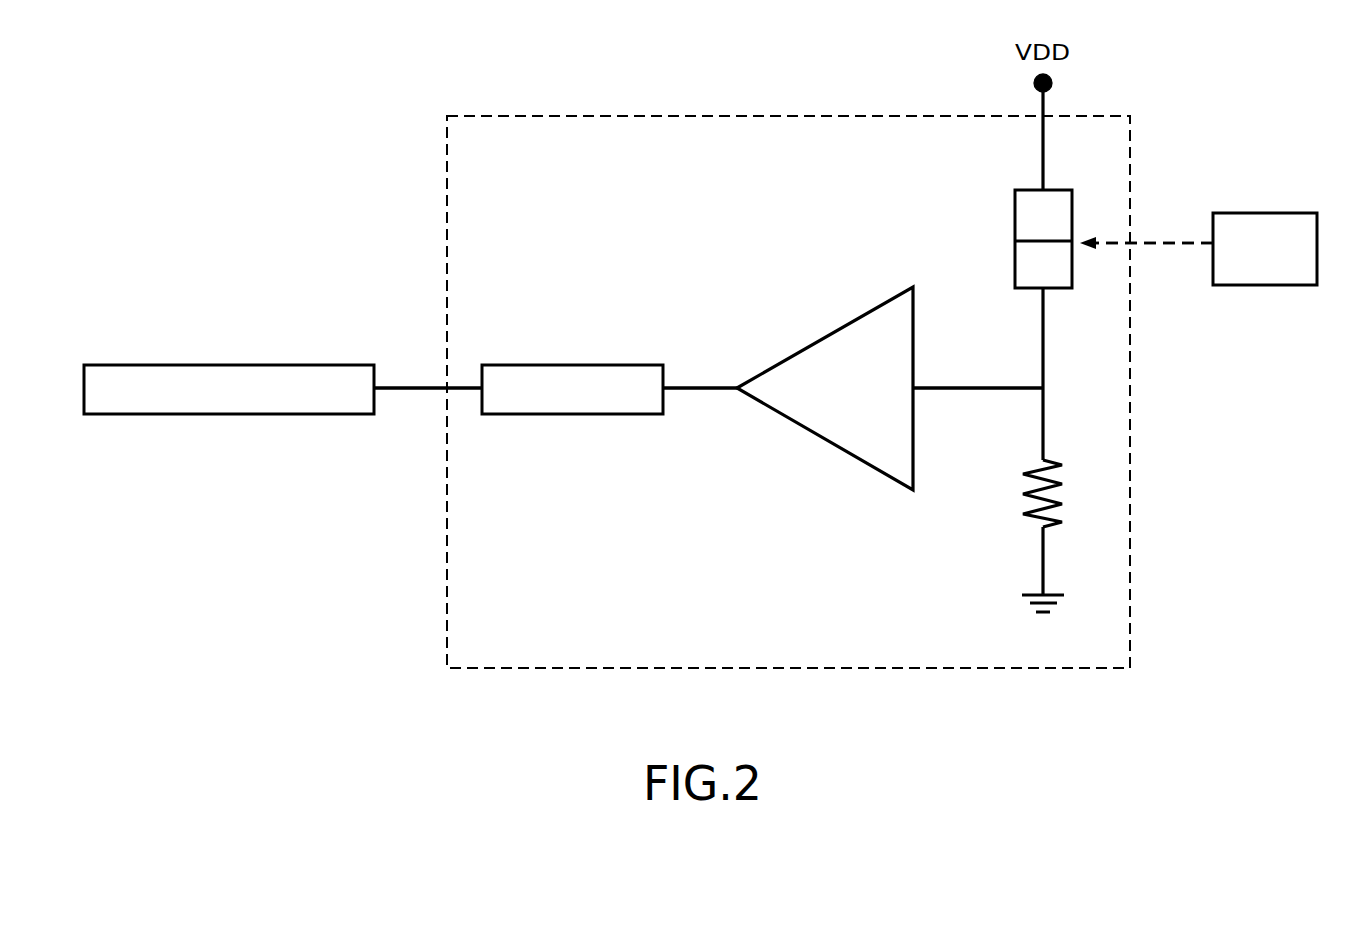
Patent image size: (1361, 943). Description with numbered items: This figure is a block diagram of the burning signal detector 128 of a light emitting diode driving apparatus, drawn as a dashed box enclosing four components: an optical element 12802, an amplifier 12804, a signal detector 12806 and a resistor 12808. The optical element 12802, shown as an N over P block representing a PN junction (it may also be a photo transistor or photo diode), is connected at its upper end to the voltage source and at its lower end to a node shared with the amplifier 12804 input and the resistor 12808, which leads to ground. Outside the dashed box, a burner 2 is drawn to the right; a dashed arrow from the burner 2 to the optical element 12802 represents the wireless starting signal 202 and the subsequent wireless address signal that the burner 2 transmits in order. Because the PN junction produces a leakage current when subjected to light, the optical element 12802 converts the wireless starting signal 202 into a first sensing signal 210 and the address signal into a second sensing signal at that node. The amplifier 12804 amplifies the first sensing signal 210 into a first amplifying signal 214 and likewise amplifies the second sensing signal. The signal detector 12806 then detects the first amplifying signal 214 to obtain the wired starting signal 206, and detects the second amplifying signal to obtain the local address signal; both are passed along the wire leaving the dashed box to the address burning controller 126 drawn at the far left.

The burner 2 is at (1275, 223).
The address burning controller 126 is at (217, 408).
The burning signal detector 128 is at (647, 133).
The wireless starting signal 202 is at (1160, 242).
The wired starting signal 206 is at (417, 387).
The first sensing signal 210 is at (1043, 347).
The first amplifying signal 214 is at (697, 387).
The optical element 12802 is at (1007, 222).
The amplifier 12804 is at (835, 345).
The signal detector 12806 is at (573, 405).
The resistor 12808 is at (1065, 487).